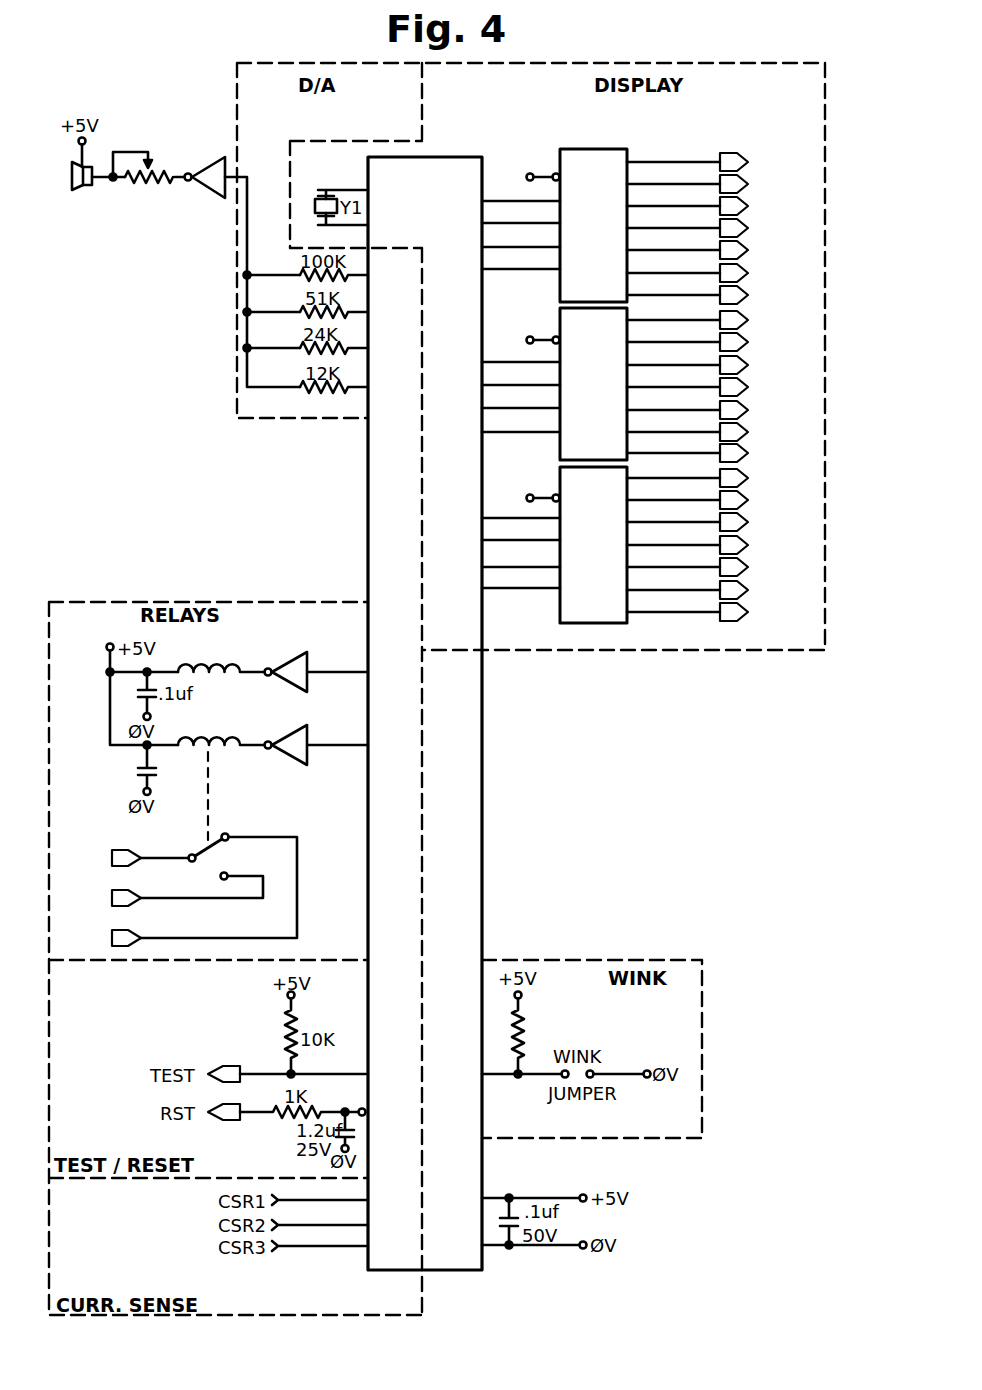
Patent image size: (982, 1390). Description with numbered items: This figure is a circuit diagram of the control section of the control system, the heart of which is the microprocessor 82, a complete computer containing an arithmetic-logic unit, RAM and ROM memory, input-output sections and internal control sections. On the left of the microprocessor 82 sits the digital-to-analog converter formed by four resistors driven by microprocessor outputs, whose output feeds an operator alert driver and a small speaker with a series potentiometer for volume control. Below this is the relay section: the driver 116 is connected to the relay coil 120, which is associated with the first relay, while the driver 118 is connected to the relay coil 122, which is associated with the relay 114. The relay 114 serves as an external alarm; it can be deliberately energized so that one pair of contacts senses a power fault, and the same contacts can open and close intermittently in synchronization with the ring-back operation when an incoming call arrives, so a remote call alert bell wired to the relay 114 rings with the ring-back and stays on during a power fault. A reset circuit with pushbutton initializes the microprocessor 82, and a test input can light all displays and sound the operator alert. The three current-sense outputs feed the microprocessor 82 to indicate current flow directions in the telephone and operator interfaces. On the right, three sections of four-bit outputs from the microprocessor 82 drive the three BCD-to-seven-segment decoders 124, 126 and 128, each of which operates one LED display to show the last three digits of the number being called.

The microprocessor 82 is at (460, 844).
The relay 114 is at (205, 852).
The driver 116 is at (306, 652).
The driver 118 is at (306, 725).
The relay coil 120 is at (237, 665).
The relay coil 122 is at (237, 738).
The BCD-to-seven-segment decoder 124 is at (586, 149).
The BCD-to-seven-segment decoder 126 is at (558, 326).
The BCD-to-seven-segment decoder 128 is at (558, 484).